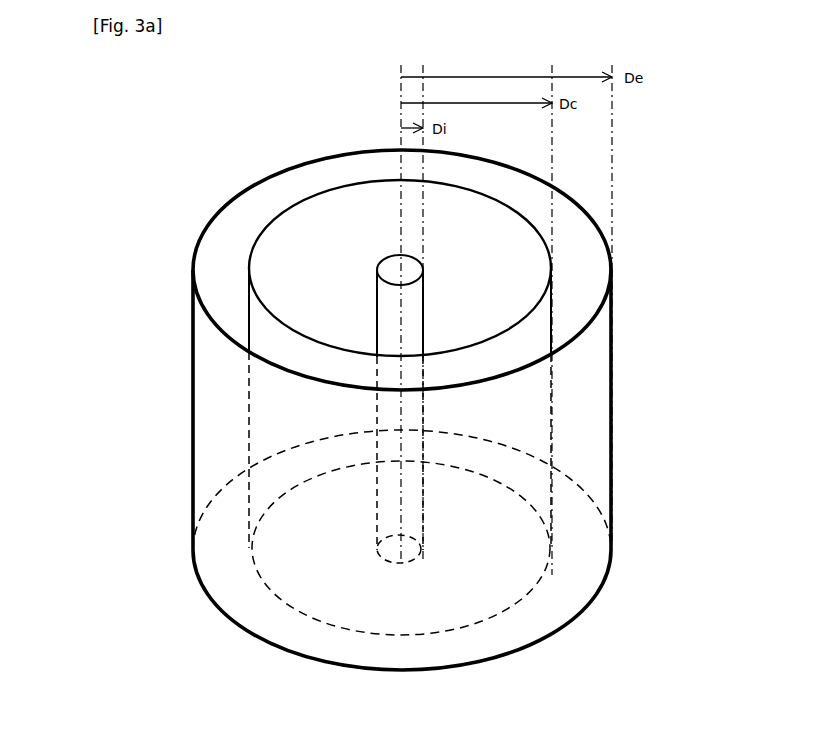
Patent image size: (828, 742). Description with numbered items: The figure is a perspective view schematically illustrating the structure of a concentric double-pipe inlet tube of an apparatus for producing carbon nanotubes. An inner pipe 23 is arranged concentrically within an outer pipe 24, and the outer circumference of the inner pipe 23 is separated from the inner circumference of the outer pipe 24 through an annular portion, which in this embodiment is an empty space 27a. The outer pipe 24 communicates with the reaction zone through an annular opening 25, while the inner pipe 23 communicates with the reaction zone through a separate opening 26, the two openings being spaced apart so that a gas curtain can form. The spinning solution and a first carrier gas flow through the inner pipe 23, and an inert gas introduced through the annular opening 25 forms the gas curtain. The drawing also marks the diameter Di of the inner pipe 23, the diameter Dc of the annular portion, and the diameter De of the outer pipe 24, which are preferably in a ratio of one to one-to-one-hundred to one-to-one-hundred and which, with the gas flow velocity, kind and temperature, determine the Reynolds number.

The inner pipe 23 is at (400, 262).
The outer pipe 24 is at (217, 210).
The annular opening 25 is at (283, 633).
The opening 26 is at (398, 552).
The empty space 27a is at (300, 420).